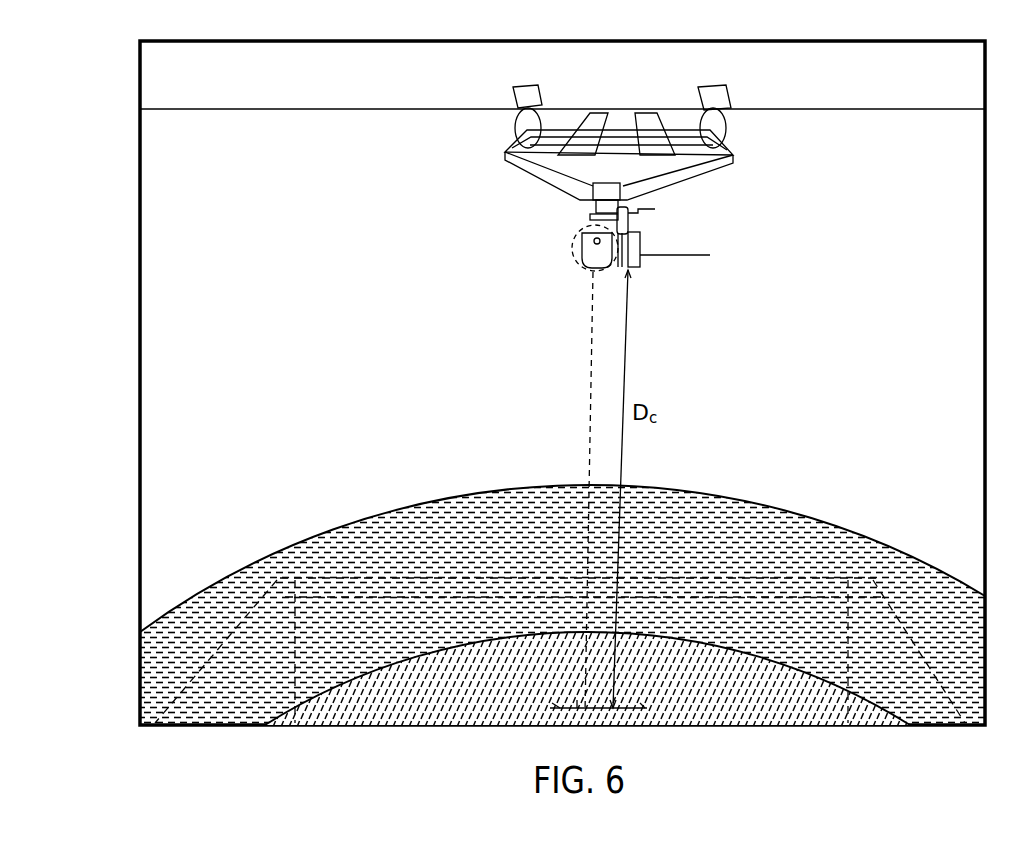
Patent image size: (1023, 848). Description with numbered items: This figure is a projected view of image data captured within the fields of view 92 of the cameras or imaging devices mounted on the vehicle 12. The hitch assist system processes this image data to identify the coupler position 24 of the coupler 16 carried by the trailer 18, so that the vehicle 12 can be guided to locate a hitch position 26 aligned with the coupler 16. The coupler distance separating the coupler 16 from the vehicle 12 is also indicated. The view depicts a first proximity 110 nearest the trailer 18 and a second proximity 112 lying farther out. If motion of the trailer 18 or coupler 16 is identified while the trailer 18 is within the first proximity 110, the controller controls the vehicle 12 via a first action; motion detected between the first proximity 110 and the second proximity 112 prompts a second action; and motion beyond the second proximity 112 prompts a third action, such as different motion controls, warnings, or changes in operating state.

The fields of view 92 is at (140, 109).
The trailer 18 is at (505, 150).
The coupler position 24 is at (572, 241).
The coupler 16 is at (593, 252).
The second proximity 112 is at (438, 497).
The vehicle 12 is at (277, 578).
The first proximity 110 is at (407, 705).
The hitch position 26 is at (565, 719).